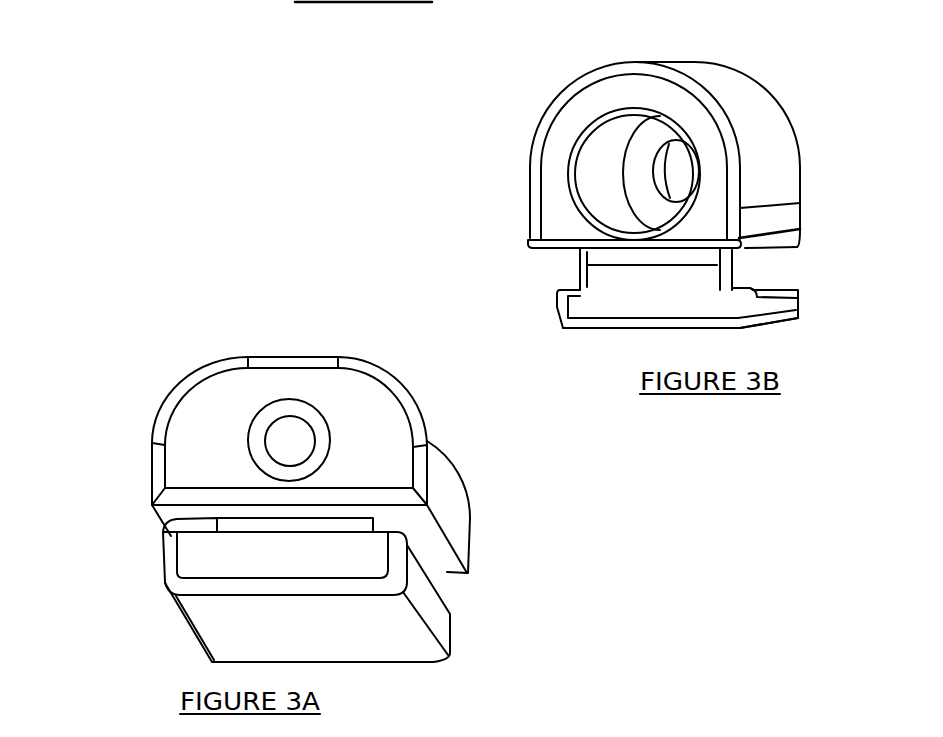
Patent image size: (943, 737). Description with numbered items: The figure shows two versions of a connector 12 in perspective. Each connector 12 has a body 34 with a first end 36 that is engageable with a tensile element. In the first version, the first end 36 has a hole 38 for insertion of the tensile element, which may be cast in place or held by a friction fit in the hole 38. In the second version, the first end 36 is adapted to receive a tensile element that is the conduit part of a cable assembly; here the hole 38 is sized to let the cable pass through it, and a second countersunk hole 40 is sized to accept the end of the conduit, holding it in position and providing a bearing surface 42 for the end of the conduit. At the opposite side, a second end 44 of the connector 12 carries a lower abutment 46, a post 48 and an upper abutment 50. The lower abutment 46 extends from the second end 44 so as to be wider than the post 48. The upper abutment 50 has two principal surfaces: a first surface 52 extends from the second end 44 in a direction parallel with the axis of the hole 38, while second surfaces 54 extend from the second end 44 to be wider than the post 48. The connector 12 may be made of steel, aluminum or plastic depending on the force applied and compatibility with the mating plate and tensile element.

In FIG. 3B, the connector 12 is at (531, 147).
In FIG. 3A, the connector 12 is at (398, 378).
In FIG. 3B, the body 34 is at (793, 133).
In FIG. 3A, the body 34 is at (474, 514).
In FIG. 3B, the first end 36 is at (553, 103).
In FIG. 3A, the first end 36 is at (450, 452).
In FIG. 3B, the hole 38 is at (667, 144).
In FIG. 3A, the hole 38 is at (284, 420).
In FIG. 3B, the second countersunk hole 40 is at (573, 190).
In FIG. 3B, the bearing surface 42 is at (638, 157).
In FIG. 3B, the second end 44 is at (556, 296).
In FIG. 3A, the second end 44 is at (163, 566).
In FIG. 3B, the lower abutment 46 is at (802, 320).
In FIG. 3A, the lower abutment 46 is at (450, 632).
In FIG. 3B, the post 48 is at (707, 288).
In FIG. 3A, the post 48 is at (232, 523).
In FIG. 3B, the upper abutment 50 is at (672, 241).
In FIG. 3A, the upper abutment 50 is at (468, 573).
In FIG. 3B, the first surface 52 is at (762, 262).
In FIG. 3A, the first surface 52 is at (343, 517).
In FIG. 3B, the second surfaces 54 is at (550, 255).
In FIG. 3A, the second surfaces 54 is at (433, 538).